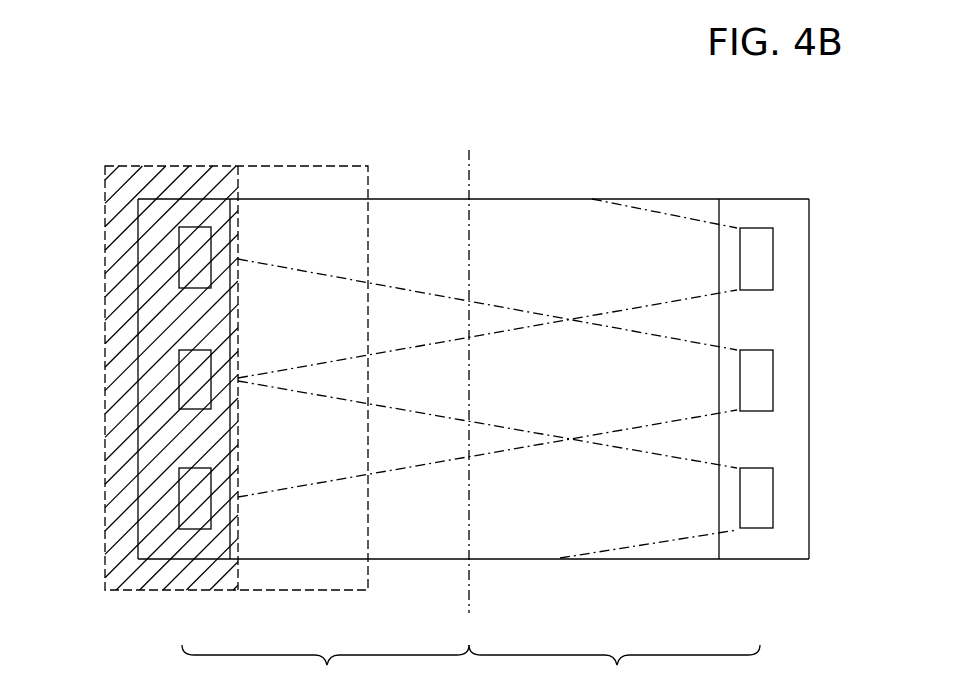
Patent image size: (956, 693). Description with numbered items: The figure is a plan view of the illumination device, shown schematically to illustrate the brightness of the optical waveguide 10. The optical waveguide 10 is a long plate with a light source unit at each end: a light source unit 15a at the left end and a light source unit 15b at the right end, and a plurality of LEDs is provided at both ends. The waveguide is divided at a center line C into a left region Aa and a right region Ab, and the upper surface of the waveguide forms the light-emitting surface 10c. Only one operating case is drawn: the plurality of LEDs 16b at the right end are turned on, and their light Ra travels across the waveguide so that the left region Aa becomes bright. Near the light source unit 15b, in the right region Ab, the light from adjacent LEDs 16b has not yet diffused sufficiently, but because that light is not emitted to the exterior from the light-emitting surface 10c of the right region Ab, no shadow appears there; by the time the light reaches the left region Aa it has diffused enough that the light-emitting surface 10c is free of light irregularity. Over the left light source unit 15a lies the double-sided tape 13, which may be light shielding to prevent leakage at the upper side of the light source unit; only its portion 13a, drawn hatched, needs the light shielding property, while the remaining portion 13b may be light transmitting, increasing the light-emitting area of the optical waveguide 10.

The optical waveguide 10 is at (482, 199).
The light-emitting surface 10c is at (448, 210).
The double-sided tape 13 is at (285, 75).
The portion of the double-sided tape 13a is at (178, 166).
The remaining portion of the double-sided tape 13b is at (260, 166).
The light source unit 15a is at (137, 220).
The light source unit 15b is at (743, 199).
The LEDs 16b is at (190, 529).
The center line C is at (469, 368).
The light rays Ra is at (692, 445).
The left region Aa is at (325, 669).
The right region Ab is at (614, 669).